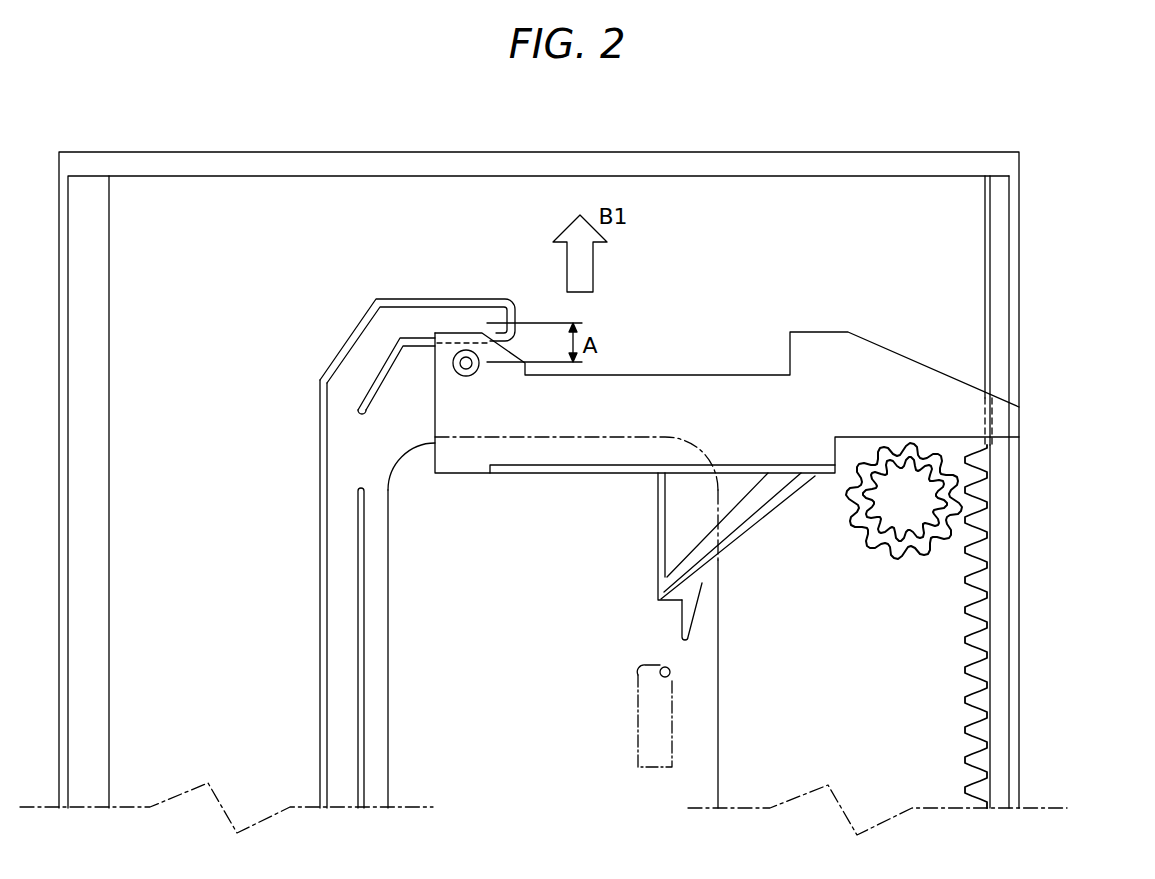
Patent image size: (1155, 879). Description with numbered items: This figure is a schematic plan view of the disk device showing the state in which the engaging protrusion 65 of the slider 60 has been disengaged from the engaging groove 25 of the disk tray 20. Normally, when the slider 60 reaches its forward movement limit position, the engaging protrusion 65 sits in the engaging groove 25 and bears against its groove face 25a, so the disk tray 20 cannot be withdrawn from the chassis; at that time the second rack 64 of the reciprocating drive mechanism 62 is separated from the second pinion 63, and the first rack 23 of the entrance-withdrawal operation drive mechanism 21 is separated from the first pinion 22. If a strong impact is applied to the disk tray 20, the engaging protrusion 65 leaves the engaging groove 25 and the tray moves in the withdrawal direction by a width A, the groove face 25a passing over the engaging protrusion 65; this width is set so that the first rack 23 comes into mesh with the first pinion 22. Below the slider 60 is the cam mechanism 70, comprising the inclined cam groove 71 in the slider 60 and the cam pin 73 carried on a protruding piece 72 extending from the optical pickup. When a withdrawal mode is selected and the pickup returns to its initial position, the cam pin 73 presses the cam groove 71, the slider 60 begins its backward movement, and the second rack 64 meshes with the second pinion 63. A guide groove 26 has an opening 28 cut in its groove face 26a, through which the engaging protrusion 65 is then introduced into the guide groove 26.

The disk tray 20 is at (1021, 307).
The entrance-withdrawal operation drive mechanism 21 is at (1051, 626).
The first pinion 22 is at (975, 575).
The first rack 23 is at (980, 642).
The engaging groove 25 is at (400, 314).
The groove face 25a is at (450, 348).
The guide groove 26 is at (345, 645).
The groove face 26a is at (365, 568).
The opening 28 is at (363, 457).
The slider 60 is at (668, 375).
The reciprocating drive mechanism 62 is at (992, 501).
The second pinion 63 is at (935, 500).
The second rack 64 is at (985, 452).
The engaging protrusion 65 is at (462, 377).
The cam mechanism 70 is at (679, 620).
The cam groove 71 is at (700, 572).
The protruding piece 72 is at (672, 712).
The cam pin 73 is at (668, 667).